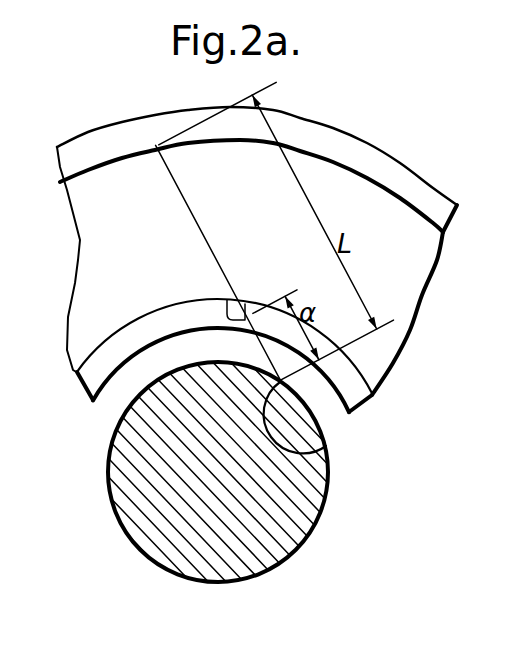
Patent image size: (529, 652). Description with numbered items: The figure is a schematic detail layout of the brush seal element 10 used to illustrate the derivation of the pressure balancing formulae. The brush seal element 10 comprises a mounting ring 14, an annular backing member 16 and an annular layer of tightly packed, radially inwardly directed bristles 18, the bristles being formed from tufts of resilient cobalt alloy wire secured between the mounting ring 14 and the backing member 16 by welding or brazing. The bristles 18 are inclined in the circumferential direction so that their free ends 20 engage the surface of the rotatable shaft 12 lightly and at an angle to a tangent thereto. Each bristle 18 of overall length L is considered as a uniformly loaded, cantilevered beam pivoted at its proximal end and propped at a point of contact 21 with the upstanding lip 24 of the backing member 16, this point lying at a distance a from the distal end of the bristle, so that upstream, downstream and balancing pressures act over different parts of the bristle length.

The brush seal element 10 is at (149, 166).
The rotatable shaft 12 is at (290, 520).
The mounting ring 14 is at (127, 126).
The annular backing member 16 is at (403, 277).
The bristles 18 is at (213, 257).
The free ends 20 is at (322, 447).
The point of contact 21 is at (233, 298).
The upstanding lip 24 is at (357, 393).